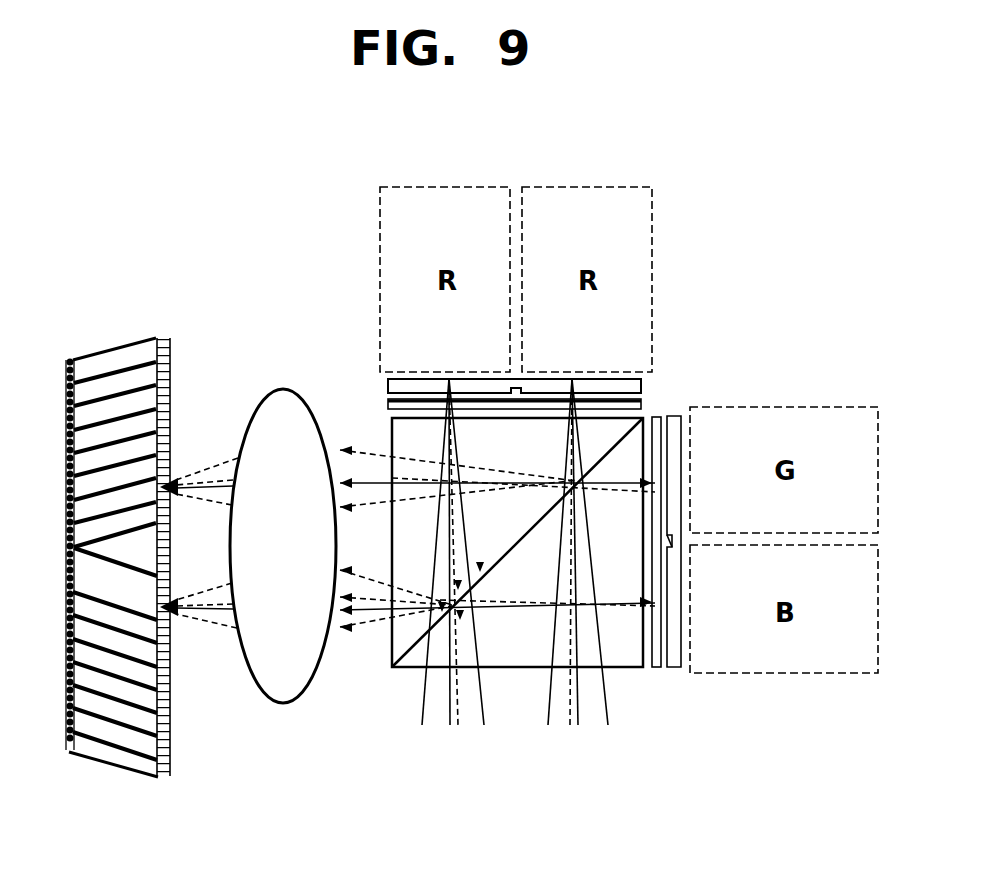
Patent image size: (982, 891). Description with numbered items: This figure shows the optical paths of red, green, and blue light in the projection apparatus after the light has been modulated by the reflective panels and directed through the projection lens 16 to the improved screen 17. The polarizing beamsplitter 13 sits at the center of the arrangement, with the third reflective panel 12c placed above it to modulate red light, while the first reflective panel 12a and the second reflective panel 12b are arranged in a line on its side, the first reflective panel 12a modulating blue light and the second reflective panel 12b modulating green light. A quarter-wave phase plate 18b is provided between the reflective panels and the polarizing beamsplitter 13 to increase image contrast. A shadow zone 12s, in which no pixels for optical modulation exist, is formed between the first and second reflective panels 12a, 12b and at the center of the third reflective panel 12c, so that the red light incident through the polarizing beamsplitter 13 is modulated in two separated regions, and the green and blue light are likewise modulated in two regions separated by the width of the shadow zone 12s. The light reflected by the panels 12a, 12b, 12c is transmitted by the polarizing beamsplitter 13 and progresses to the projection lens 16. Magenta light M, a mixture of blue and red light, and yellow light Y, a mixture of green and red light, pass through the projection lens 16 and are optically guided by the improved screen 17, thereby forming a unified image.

The first reflective panel 12a is at (672, 668).
The second reflective panel 12b is at (672, 418).
The third reflective panel 12c is at (392, 383).
The shadow zone 12s is at (514, 394).
The polarizing beamsplitter 13 is at (413, 672).
The projection lens 16 is at (286, 705).
The screen 17 is at (121, 758).
The λ/4 phase plate 18b is at (390, 404).
The yellow light Y is at (218, 462).
The magenta light M is at (217, 632).